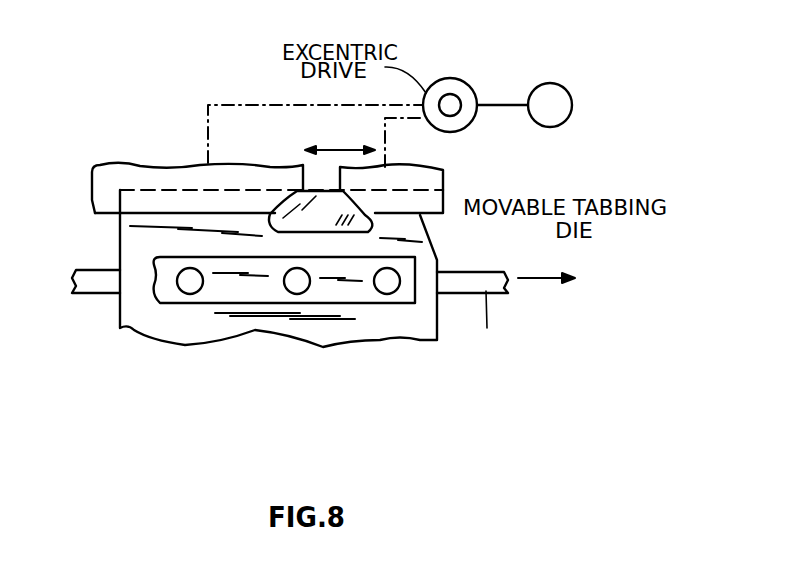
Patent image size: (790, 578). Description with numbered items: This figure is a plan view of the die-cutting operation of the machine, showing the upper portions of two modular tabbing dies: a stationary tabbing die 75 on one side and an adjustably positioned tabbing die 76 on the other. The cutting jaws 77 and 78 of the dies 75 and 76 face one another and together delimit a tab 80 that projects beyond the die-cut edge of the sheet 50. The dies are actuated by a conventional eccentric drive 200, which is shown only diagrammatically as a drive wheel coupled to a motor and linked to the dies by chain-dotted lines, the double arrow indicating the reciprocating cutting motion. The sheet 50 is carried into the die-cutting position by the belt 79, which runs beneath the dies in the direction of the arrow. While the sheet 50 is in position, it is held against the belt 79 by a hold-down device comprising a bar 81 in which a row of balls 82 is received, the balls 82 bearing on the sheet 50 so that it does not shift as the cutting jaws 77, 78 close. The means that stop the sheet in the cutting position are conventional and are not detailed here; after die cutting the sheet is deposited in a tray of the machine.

The eccentric drive 200 is at (446, 79).
The sheet 50 is at (137, 322).
The stationary tabbing die 75 is at (174, 187).
The adjustably positioned tabbing die 76 is at (420, 202).
The cutting jaw 77 is at (100, 215).
The cutting jaw 78 is at (420, 215).
The belt 79 is at (90, 283).
The tab 80 is at (293, 203).
The bar 81 is at (300, 357).
The balls 82 is at (190, 283).